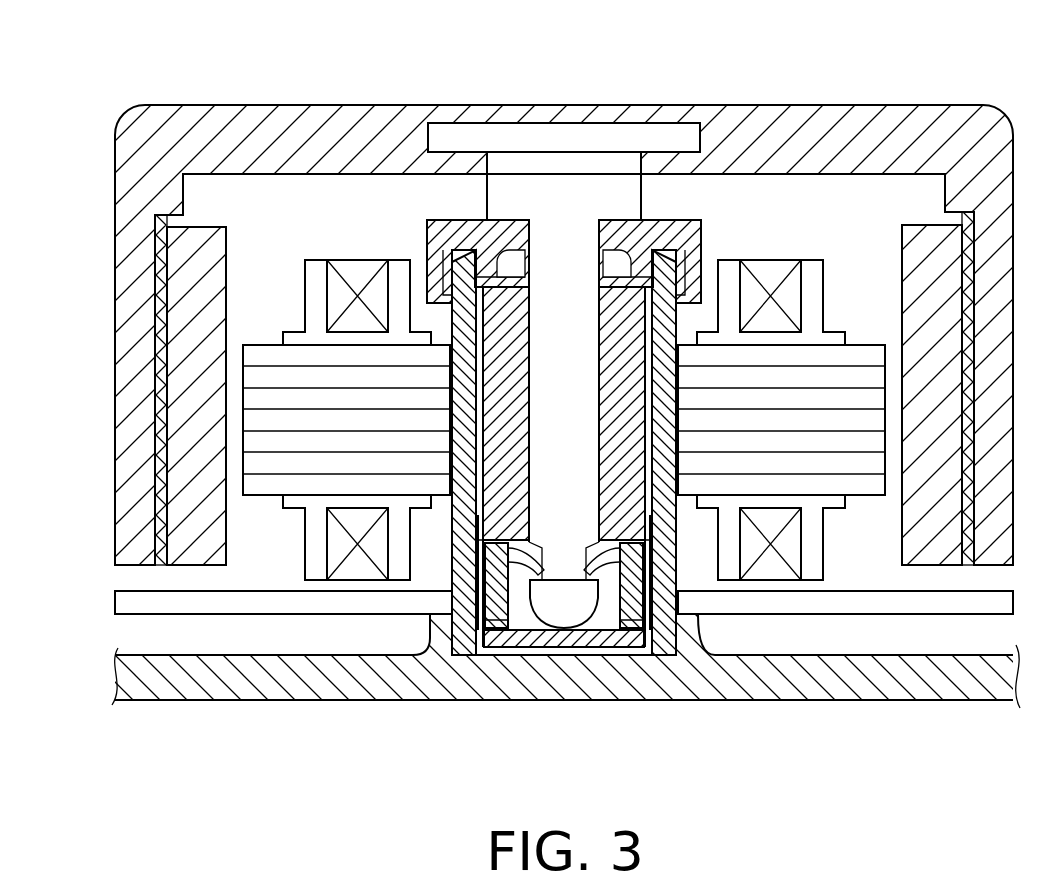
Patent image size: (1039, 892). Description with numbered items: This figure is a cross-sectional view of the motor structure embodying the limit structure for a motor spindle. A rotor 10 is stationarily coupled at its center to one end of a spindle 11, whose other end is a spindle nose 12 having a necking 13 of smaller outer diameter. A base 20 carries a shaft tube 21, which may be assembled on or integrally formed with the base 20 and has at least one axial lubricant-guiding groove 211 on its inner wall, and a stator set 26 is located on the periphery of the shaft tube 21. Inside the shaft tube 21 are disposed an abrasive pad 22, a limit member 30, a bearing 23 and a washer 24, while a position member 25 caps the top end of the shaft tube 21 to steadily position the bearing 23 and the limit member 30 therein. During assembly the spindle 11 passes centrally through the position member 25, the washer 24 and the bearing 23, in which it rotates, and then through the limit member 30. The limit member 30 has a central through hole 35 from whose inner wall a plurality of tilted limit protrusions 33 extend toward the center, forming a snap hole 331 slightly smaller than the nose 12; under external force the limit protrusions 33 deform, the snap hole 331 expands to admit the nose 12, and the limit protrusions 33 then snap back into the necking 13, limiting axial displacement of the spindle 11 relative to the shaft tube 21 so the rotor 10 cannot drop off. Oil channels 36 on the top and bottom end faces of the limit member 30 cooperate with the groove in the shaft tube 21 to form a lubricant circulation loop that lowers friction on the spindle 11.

The rotor 10 is at (812, 150).
The spindle 11 is at (565, 240).
The spindle nose 12 is at (570, 612).
The necking 13 is at (588, 574).
The base 20 is at (847, 700).
The shaft tube 21 is at (690, 480).
The axial lubricant-guiding groove 211 is at (668, 482).
The abrasive pad 22 is at (527, 650).
The bearing 23 is at (515, 390).
The washer 24 is at (483, 265).
The position member 25 is at (690, 237).
The stator set 26 is at (270, 362).
The limit member 30 is at (478, 625).
The limit protrusion 33 is at (640, 600).
The snap hole 331 is at (540, 567).
The through hole 35 is at (500, 645).
The oil channel 36 is at (483, 538).